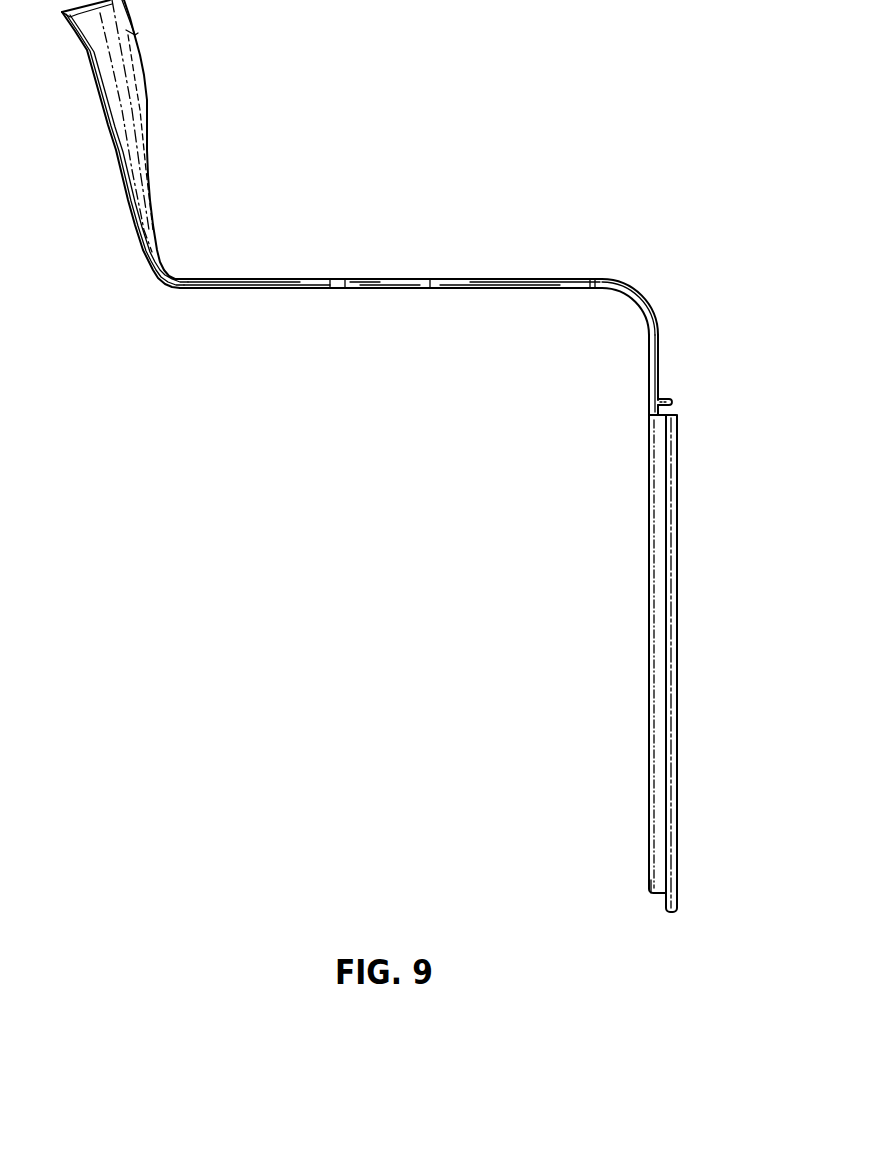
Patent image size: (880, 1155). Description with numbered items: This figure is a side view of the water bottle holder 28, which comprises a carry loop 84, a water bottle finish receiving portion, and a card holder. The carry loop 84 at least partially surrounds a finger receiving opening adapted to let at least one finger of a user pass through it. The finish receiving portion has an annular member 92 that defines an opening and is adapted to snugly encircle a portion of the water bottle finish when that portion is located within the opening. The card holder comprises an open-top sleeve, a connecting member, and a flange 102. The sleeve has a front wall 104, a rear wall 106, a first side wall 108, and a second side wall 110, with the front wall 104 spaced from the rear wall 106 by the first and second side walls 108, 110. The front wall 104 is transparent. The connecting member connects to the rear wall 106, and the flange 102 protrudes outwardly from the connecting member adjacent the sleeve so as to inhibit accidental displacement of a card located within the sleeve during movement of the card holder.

The water bottle holder 28 is at (552, 56).
The carry loop 84 is at (117, 153).
The annular member 92 is at (360, 283).
The flange 102 is at (672, 398).
The front wall 104 is at (675, 620).
The rear wall 106 is at (650, 707).
The first side wall 108 is at (660, 873).
The second side wall 110 is at (649, 413).